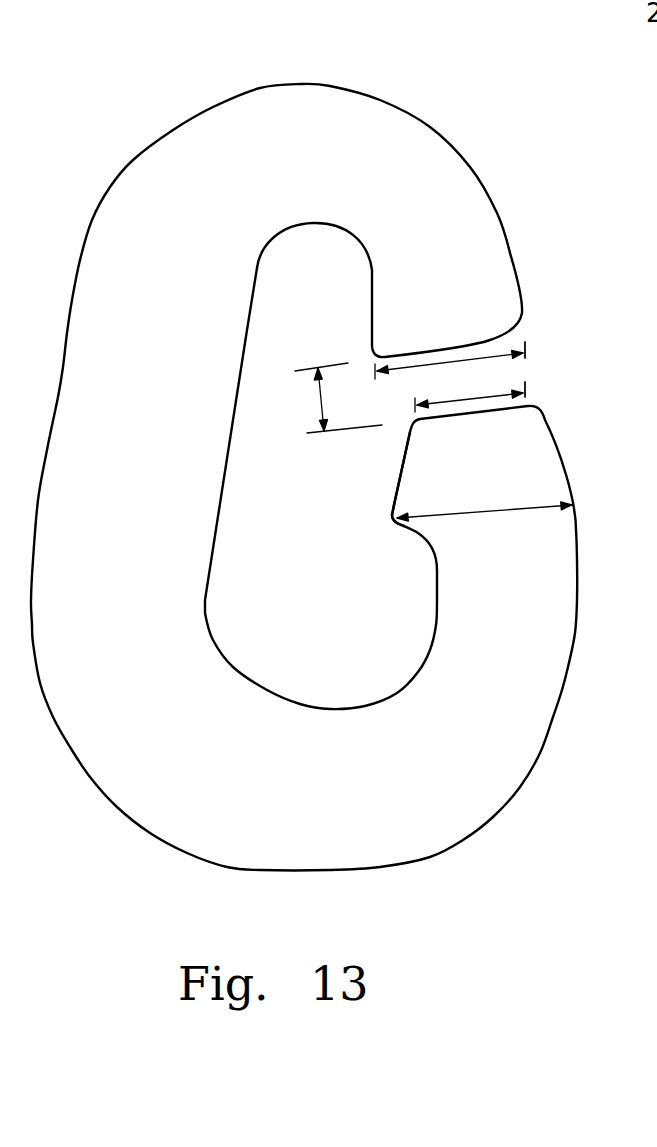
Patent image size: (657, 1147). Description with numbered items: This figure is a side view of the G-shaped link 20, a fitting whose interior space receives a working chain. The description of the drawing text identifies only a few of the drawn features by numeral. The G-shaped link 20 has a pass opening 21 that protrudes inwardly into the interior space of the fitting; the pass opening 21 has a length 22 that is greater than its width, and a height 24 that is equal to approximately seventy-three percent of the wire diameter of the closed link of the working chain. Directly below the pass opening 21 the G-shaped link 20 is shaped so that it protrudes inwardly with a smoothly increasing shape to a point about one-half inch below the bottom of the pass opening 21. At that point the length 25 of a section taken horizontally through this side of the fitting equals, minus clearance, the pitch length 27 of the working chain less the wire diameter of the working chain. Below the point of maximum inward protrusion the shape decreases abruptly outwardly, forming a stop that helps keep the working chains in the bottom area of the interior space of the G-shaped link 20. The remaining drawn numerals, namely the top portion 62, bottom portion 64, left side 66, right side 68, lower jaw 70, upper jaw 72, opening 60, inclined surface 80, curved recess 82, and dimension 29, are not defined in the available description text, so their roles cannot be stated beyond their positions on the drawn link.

The G-shaped link 20 is at (191, 66).
The top portion of link 62 is at (318, 98).
The bottom portion of link 64 is at (315, 865).
The left side portion of link 66 is at (67, 387).
The right side portion of link 68 is at (550, 617).
The lower jaw 70 is at (534, 425).
The upper jaw 72 is at (493, 316).
The opening 60 is at (329, 592).
The inclined surface of lower jaw 80 is at (403, 457).
The curved recess 82 is at (420, 533).
The pitch length 27 is at (397, 498).
The upper jaw width 29 is at (443, 363).
The pass opening 21 is at (497, 380).
The length 22 is at (472, 408).
The height 24 is at (315, 403).
The length 25 is at (490, 513).